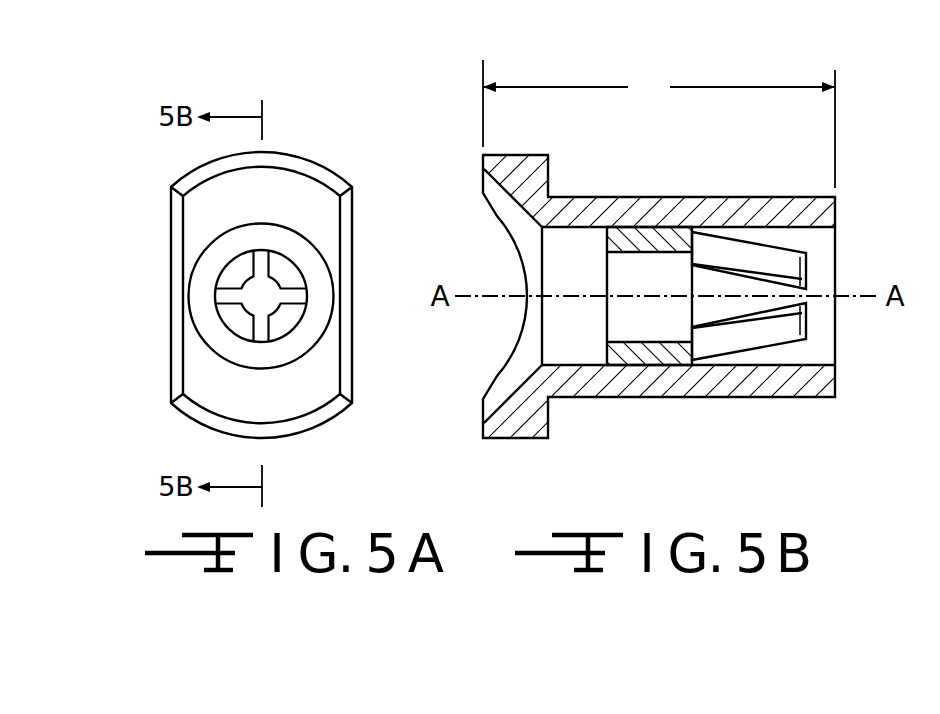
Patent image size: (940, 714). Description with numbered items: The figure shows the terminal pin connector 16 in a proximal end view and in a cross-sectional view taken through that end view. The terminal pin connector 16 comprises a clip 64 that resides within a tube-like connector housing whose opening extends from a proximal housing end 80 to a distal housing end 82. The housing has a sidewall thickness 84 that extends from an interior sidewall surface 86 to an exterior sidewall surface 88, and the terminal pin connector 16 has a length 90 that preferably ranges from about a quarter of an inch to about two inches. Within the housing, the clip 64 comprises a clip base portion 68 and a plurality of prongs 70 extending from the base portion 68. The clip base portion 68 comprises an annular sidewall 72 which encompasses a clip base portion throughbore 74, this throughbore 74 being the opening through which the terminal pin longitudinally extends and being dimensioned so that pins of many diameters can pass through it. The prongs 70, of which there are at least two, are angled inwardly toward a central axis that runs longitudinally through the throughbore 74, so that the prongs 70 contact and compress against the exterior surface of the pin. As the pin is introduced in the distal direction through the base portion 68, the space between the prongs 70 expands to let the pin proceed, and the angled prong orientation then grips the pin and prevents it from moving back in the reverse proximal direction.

In FIG. 5A, the terminal pin connector 16 is at (160, 243).
In FIG. 5B, the terminal pin connector 16 is at (852, 157).
In FIG. 5A, the clip 64 is at (308, 272).
In FIG. 5B, the clip 64 is at (755, 352).
In FIG. 5B, the clip base portion 68 is at (660, 238).
In FIG. 5A, the prongs 70 is at (280, 268).
In FIG. 5B, the prongs 70 is at (788, 328).
In FIG. 5B, the annular sidewall 72 is at (648, 350).
In FIG. 5B, the clip base portion throughbore 74 is at (627, 320).
In FIG. 5B, the proximal housing end 80 is at (483, 160).
In FIG. 5B, the distal housing end 82 is at (838, 246).
In FIG. 5B, the sidewall thickness 84 is at (595, 202).
In FIG. 5B, the interior sidewall surface 86 is at (585, 232).
In FIG. 5B, the exterior sidewall surface 88 is at (730, 196).
In FIG. 5B, the length 90 is at (659, 124).